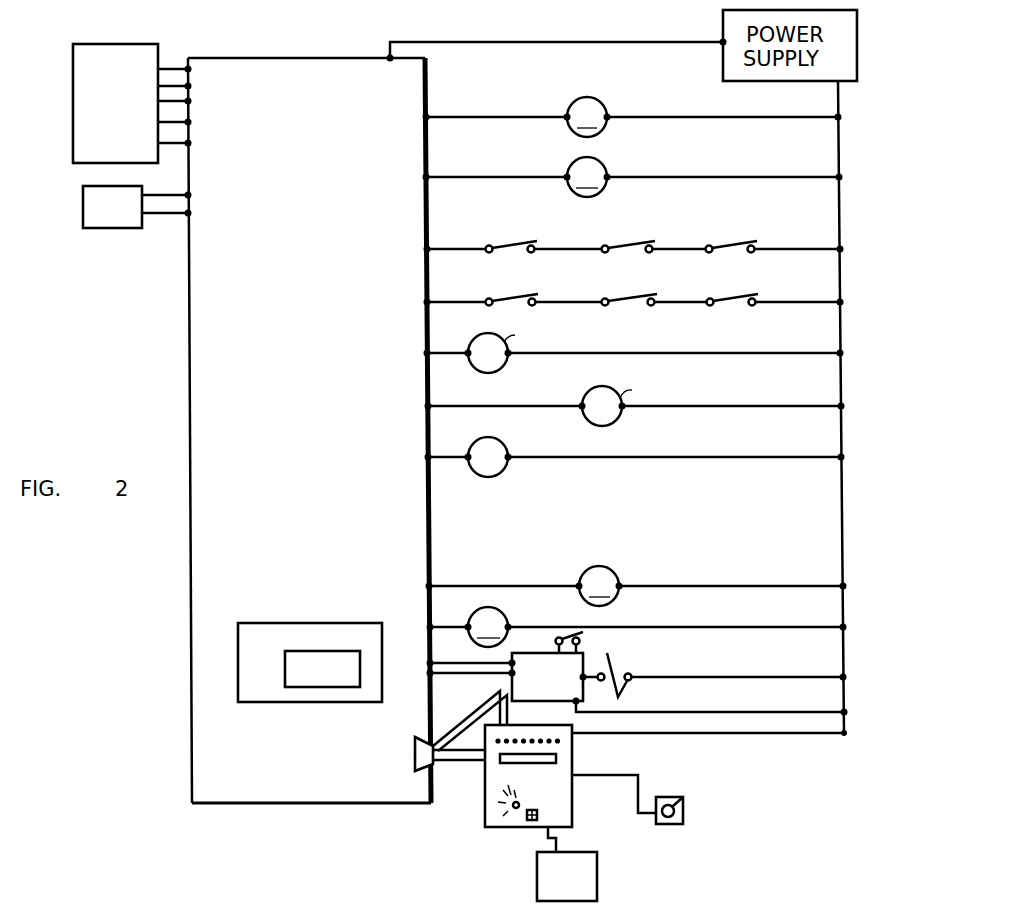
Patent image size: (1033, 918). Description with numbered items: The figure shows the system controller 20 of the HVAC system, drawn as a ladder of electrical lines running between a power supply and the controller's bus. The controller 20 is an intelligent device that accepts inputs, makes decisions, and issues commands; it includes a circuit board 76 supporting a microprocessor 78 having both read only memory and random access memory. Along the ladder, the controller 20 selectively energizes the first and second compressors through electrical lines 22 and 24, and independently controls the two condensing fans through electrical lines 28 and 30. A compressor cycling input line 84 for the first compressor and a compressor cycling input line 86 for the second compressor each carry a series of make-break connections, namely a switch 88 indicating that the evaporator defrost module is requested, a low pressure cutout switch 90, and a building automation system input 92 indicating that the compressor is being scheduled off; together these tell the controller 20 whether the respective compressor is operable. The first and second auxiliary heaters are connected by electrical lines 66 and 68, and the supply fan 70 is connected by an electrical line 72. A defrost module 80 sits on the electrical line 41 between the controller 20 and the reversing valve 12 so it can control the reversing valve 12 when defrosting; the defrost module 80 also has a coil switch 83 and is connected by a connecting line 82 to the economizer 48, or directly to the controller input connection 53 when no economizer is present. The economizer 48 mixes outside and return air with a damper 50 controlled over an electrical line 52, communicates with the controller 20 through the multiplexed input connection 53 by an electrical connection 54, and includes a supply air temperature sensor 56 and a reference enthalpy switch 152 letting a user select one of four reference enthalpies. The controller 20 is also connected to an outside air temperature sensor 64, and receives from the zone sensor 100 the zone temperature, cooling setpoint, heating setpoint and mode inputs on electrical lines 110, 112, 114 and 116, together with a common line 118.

The reversing valve 12 is at (612, 662).
The system controller 20 is at (390, 42).
The electrical line 22 is at (493, 116).
The electrical line 24 is at (490, 175).
The electrical line 28 is at (444, 352).
The electrical line 30 is at (528, 405).
The electrical line 41 is at (470, 662).
The economizer 48 is at (559, 798).
The damper 50 is at (667, 797).
The electrical line 52 is at (596, 773).
The input connection 53 is at (414, 756).
The electrical connection 54 is at (453, 763).
The supply air temperature sensor 56 is at (580, 887).
The outside air temperature sensor 64 is at (126, 220).
The electrical line 66 is at (509, 585).
The electrical line 68 is at (449, 626).
The supply fan 70 is at (449, 456).
The electrical line 72 is at (500, 472).
The circuit board 76 is at (274, 657).
The microprocessor 78 is at (333, 685).
The defrost module 80 is at (562, 690).
The connecting line 82 is at (486, 710).
The coil switch 83 is at (556, 640).
The compressor cycling input line 84 is at (460, 248).
The compressor cycling input line 86 is at (460, 301).
The switch 88 is at (516, 247).
The low pressure cutout switch 90 is at (632, 247).
The building automation system input 92 is at (737, 247).
The zone sensor 100 is at (132, 116).
The electrical line 110 is at (168, 67).
The electrical line 112 is at (178, 85).
The electrical line 114 is at (178, 100).
The electrical line 116 is at (178, 125).
The common line 118 is at (173, 145).
The reference enthalpy switch 152 is at (530, 823).